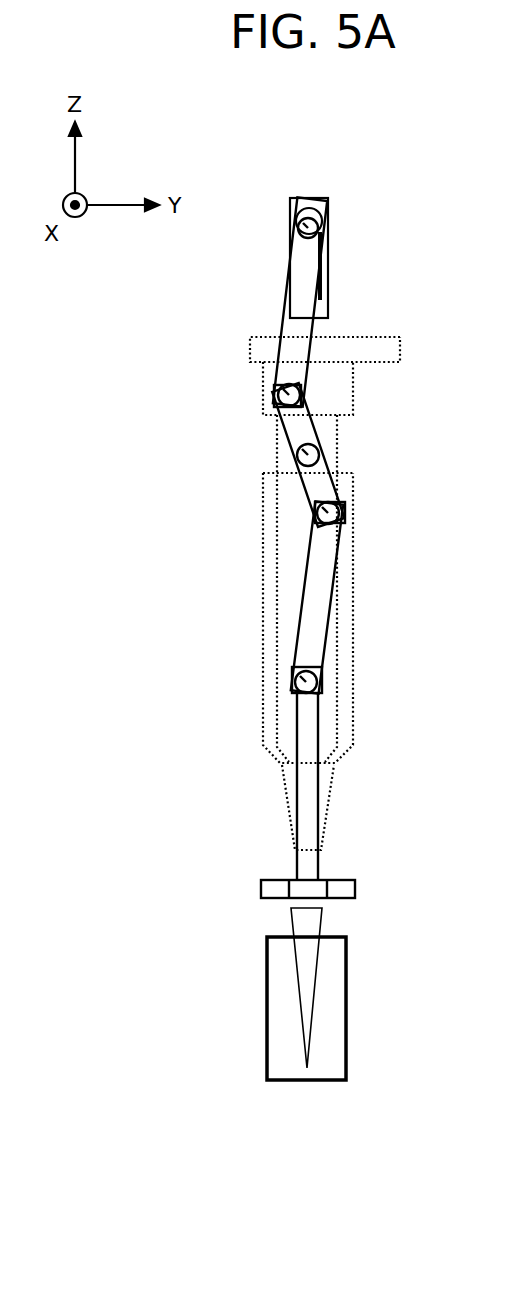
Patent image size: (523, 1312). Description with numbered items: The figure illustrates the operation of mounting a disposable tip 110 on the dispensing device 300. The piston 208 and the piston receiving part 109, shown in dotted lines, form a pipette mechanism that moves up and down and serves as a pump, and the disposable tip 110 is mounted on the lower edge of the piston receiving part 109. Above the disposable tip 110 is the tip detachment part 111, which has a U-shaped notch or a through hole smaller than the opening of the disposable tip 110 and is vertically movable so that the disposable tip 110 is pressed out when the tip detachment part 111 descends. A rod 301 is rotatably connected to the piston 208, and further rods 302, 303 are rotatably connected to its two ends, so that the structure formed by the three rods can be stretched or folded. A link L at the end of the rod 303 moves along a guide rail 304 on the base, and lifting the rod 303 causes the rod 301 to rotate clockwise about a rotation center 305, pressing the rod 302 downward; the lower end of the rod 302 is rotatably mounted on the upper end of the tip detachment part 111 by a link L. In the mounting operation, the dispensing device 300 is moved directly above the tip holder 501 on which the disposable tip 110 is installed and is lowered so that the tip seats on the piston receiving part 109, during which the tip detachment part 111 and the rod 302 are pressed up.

The dispensing device 300 is at (340, 186).
The guide rail 304 is at (327, 210).
The rod 303 is at (293, 312).
The rod 301 is at (290, 436).
The rotation center 305 is at (318, 452).
The rod 302 is at (325, 583).
The link L is at (314, 228).
The piston 208 is at (285, 618).
The piston receiving part 109 is at (262, 705).
The tip detachment part 111 is at (352, 893).
The disposable tip 110 is at (296, 985).
The tip holder 501 is at (347, 1000).